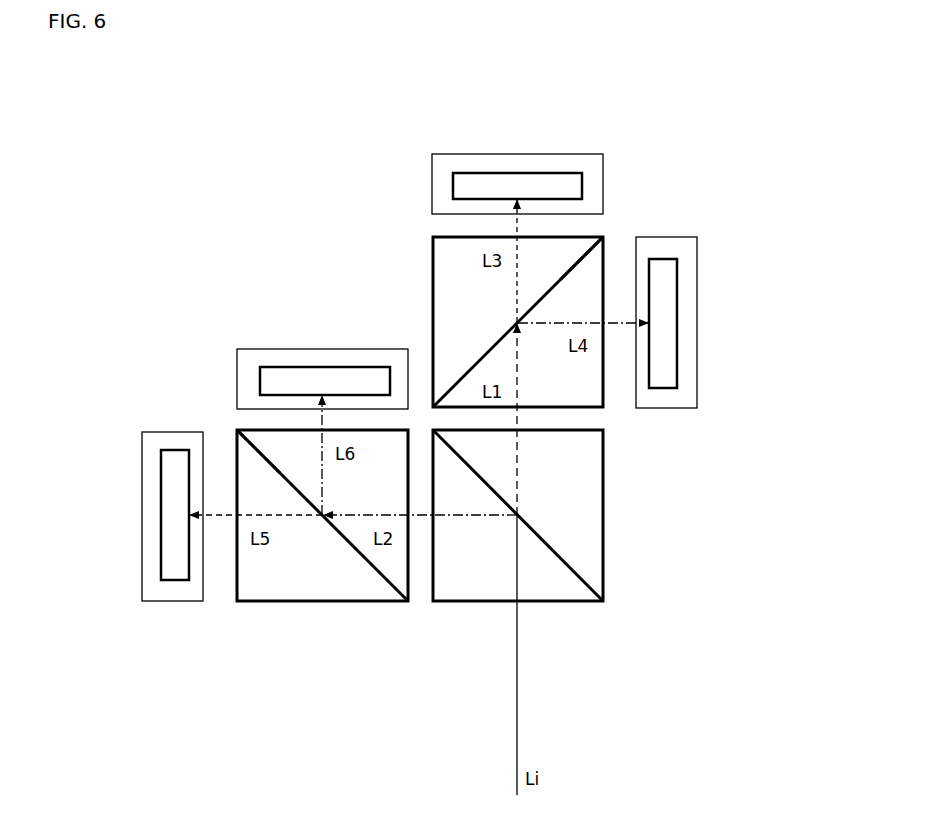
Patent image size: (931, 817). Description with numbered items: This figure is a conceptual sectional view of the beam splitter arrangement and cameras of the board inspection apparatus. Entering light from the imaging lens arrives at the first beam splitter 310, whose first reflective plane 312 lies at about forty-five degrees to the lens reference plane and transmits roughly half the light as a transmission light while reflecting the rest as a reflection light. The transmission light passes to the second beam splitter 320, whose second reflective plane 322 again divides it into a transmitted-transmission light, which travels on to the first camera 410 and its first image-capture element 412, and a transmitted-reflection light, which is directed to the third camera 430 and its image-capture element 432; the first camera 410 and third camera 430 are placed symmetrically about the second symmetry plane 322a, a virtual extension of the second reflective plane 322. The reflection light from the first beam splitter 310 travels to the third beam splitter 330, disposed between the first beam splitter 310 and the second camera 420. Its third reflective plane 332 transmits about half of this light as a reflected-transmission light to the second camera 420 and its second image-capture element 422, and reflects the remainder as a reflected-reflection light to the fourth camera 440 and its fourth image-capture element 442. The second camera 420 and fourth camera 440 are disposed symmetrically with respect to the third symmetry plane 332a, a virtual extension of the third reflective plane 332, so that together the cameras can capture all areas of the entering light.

The first beam splitter 310 is at (557, 508).
The first reflective plane 312 is at (573, 567).
The second beam splitter 320 is at (473, 292).
The second reflective plane 322 is at (473, 362).
The second symmetry plane 322a is at (603, 237).
The third beam splitter 330 is at (293, 560).
The third reflective plane 332 is at (365, 560).
The third symmetry plane 332a is at (237, 430).
The first camera 410 is at (445, 163).
The first image-capture element 412 is at (557, 170).
The second camera 420 is at (160, 473).
The second image-capture element 422 is at (158, 588).
The third camera 430 is at (678, 250).
The third light receiving element 432 is at (677, 350).
The fourth camera 440 is at (250, 363).
The fourth image-capture element 442 is at (317, 367).